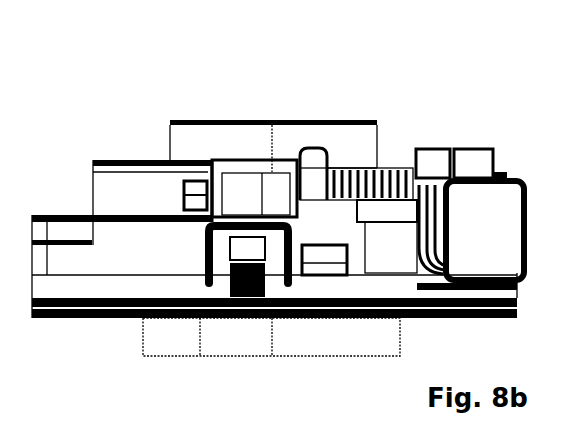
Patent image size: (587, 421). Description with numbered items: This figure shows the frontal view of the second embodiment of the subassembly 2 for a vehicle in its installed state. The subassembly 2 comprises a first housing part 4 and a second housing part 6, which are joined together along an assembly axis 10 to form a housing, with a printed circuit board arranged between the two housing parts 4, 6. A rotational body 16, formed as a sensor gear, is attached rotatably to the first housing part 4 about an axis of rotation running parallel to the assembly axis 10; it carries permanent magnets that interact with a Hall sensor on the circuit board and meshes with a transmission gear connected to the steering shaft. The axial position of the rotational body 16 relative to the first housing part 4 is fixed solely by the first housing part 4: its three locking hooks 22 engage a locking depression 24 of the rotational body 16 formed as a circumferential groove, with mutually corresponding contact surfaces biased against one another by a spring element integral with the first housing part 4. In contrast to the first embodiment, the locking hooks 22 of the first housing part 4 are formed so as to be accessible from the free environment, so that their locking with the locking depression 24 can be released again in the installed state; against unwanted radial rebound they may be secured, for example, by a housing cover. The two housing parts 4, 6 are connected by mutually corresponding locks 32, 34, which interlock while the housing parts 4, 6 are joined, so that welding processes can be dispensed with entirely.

The subassembly 2 is at (180, 95).
The first housing part 4 is at (108, 262).
The second housing part 6 is at (80, 285).
The assembly axis 10 is at (272, 348).
The rotational body 16 is at (389, 168).
The locking hooks 22 is at (306, 160).
The locking depression 24 is at (339, 147).
The lock 32 is at (253, 250).
The lock 34 is at (223, 242).